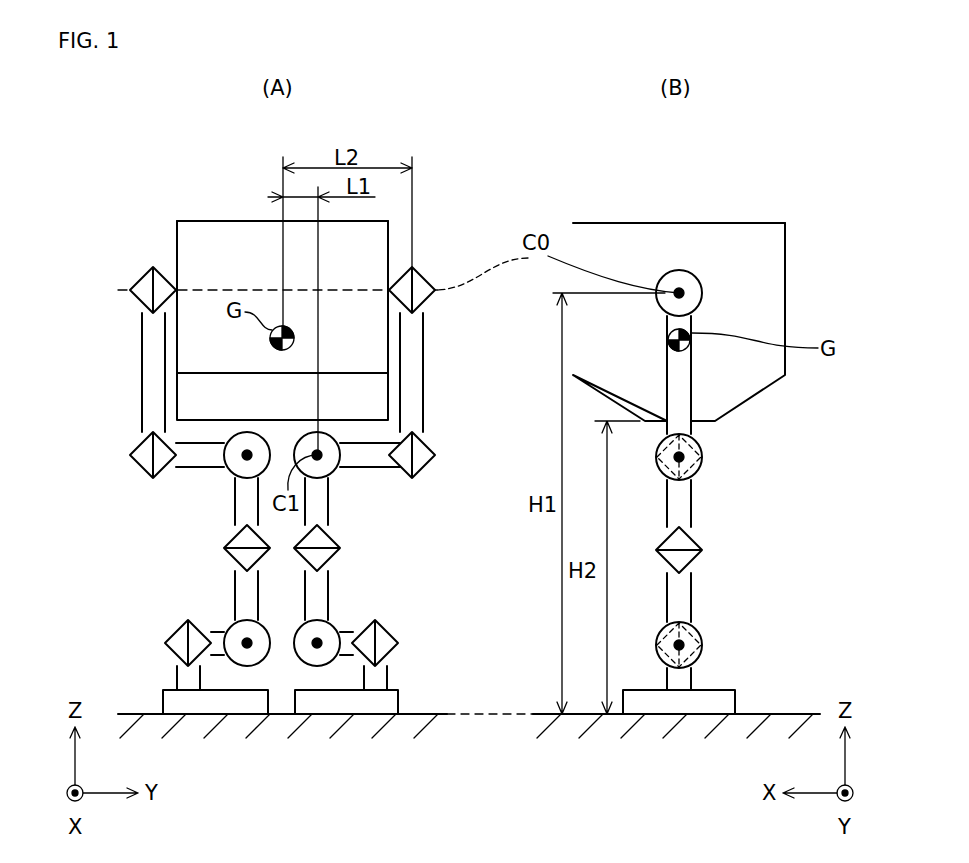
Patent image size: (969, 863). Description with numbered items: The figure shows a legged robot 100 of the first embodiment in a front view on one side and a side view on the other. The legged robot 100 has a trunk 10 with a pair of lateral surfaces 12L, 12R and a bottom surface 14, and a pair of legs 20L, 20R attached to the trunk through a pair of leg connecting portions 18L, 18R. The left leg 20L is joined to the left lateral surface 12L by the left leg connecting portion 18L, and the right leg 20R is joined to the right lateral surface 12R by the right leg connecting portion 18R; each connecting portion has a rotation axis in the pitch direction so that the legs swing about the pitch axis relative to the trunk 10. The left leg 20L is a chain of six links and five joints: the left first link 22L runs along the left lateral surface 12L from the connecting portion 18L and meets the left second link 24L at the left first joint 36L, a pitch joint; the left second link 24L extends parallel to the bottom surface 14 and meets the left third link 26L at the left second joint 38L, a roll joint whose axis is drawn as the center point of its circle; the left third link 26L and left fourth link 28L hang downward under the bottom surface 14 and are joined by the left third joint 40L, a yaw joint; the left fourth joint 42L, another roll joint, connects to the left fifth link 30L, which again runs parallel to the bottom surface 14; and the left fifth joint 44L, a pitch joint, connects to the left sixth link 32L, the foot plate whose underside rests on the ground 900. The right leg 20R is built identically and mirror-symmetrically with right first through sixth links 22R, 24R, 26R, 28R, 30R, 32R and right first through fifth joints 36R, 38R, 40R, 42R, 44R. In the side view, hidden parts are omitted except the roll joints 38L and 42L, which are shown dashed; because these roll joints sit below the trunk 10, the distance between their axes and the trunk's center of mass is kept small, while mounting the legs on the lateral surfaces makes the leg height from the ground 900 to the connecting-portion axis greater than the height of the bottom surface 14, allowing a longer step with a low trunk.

The legged robot 100 is at (468, 196).
The trunk 10 is at (152, 222).
The right lateral surface 12R is at (177, 255).
The left lateral surface 12L is at (390, 258).
The bottom surface 14 is at (363, 402).
The right leg connecting portion 18R is at (135, 282).
The left leg connecting portion 18L is at (430, 282).
The right leg 20R is at (130, 330).
The left leg 20L is at (430, 330).
The right first link 22R is at (142, 373).
The left first link 22L is at (423, 373).
The right second link 24R is at (183, 468).
The left second link 24L is at (370, 471).
The right third link 26R is at (235, 535).
The left third link 26L is at (328, 535).
The right fourth link 28R is at (235, 585).
The left fourth link 28L is at (328, 585).
The right fifth link 30R is at (213, 631).
The left fifth link 30L is at (352, 631).
The right sixth link 32R is at (163, 697).
The left sixth link 32L is at (398, 697).
The right first joint 36R is at (135, 450).
The left first joint 36L is at (435, 452).
The right second joint 38R is at (227, 475).
The left second joint 38L is at (335, 475).
The right third joint 40R is at (228, 553).
The left third joint 40L is at (340, 553).
The right fourth joint 42R is at (233, 630).
The left fourth joint 42L is at (332, 630).
The right fifth joint 44R is at (165, 640).
The left fifth joint 44L is at (399, 640).
The ground 900 is at (413, 716).